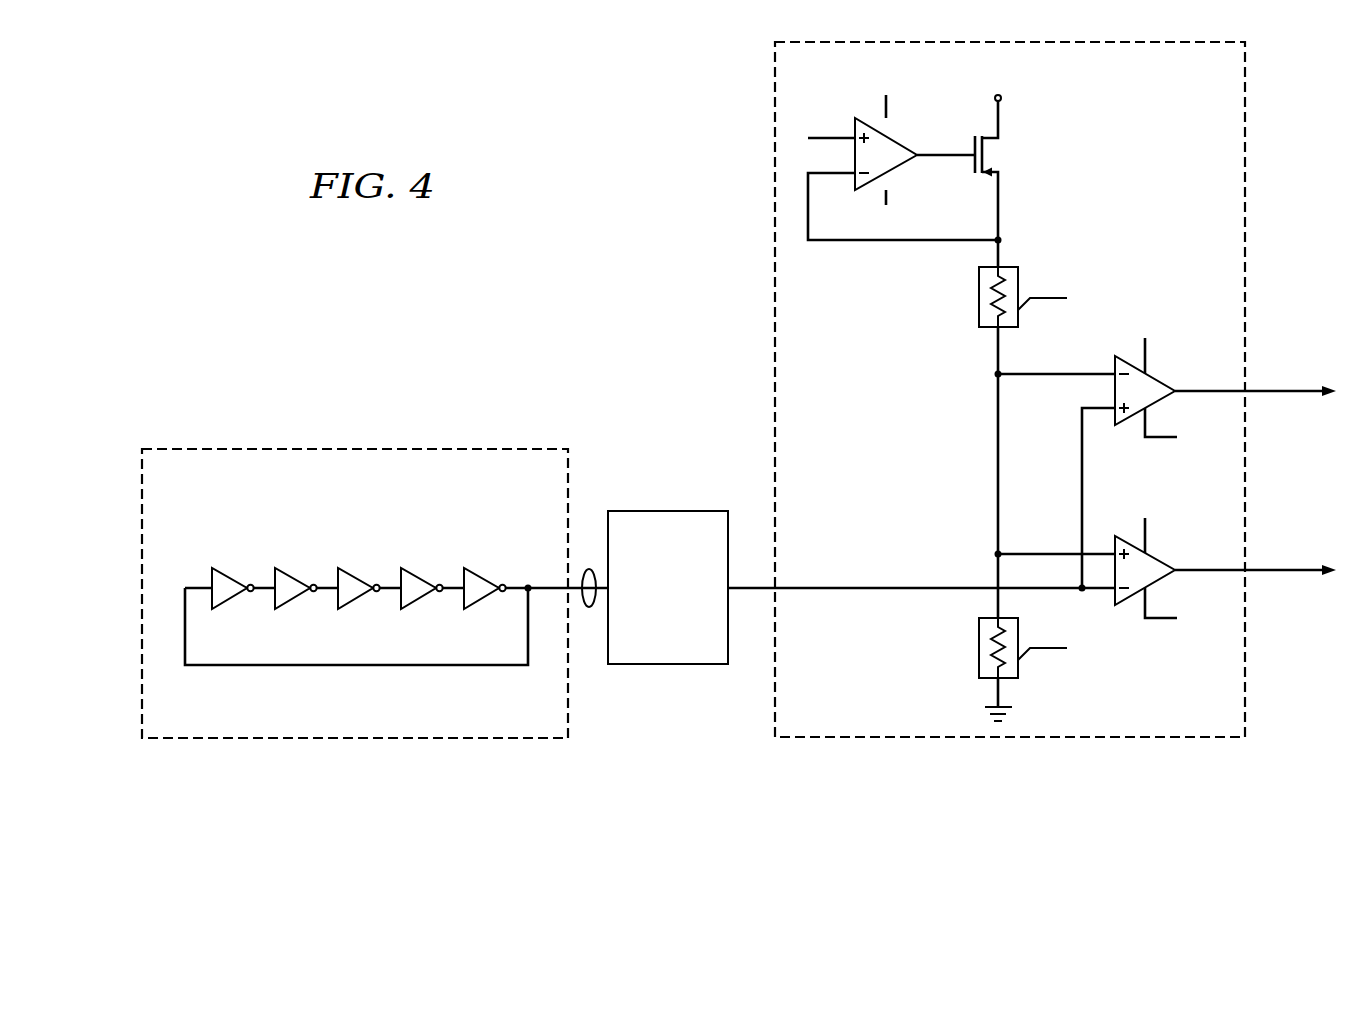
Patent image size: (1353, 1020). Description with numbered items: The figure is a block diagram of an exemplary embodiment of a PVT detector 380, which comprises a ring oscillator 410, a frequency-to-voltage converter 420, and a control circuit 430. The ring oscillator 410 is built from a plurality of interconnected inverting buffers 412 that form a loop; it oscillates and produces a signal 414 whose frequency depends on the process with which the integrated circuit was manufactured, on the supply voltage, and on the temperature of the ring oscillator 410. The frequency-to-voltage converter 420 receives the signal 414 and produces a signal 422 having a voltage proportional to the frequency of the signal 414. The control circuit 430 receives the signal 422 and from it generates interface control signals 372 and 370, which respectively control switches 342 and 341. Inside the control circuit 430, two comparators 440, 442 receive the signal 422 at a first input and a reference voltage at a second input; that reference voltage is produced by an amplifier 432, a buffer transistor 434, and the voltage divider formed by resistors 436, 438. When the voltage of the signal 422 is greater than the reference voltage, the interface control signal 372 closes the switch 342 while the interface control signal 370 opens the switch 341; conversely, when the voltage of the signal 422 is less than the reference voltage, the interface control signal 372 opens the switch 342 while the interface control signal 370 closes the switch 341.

The PVT detector 380 is at (387, 248).
The ring oscillator 410 is at (515, 449).
The inverting buffers 412 is at (502, 551).
The signal 414 is at (589, 569).
The frequency-to-voltage converter 420 is at (670, 511).
The signal 422 is at (752, 586).
The control circuit 430 is at (1185, 42).
The amplifier 432 is at (893, 137).
The buffer transistor 434 is at (1006, 154).
The resistor 436 is at (977, 293).
The resistor 438 is at (977, 647).
The comparator 440 is at (1153, 375).
The comparator 442 is at (1153, 556).
The switch 342 is at (1290, 346).
The switch 341 is at (1290, 525).
The interface control signal 372 is at (1255, 373).
The interface control signal 370 is at (1255, 551).